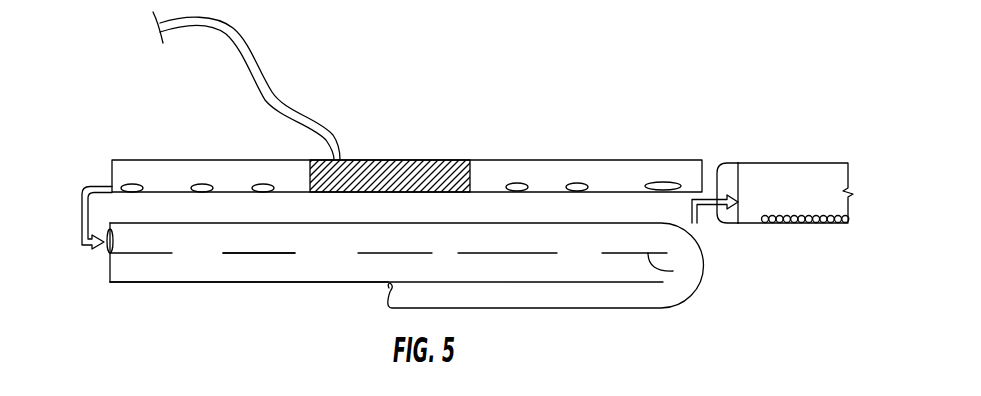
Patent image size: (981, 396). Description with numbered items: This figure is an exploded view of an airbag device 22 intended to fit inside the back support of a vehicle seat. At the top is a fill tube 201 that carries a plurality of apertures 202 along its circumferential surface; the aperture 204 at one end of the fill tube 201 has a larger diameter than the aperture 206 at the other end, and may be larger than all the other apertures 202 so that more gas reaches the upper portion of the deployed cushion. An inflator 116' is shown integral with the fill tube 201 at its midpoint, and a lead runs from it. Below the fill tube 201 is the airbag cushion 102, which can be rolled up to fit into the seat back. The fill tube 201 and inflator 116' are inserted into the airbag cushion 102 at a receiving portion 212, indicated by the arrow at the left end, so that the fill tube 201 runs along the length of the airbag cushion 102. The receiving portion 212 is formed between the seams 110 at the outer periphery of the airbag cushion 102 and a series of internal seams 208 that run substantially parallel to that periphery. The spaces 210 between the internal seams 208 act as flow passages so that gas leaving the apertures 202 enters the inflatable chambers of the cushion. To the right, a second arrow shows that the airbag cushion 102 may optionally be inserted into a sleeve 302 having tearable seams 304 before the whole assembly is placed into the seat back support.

The airbag device 22 is at (664, 91).
The airbag cushion 102 is at (343, 282).
The seams 110 is at (567, 223).
The inflator 116' is at (327, 102).
The fill tube 201 is at (490, 160).
The apertures 202 is at (517, 184).
The aperture 204 is at (665, 182).
The aperture 206 is at (131, 185).
The internal seams 208 is at (150, 257).
The spaces 210 is at (322, 250).
The receiving portion 212 is at (105, 245).
The sleeve 302 is at (776, 168).
The tearable seams 304 is at (813, 224).